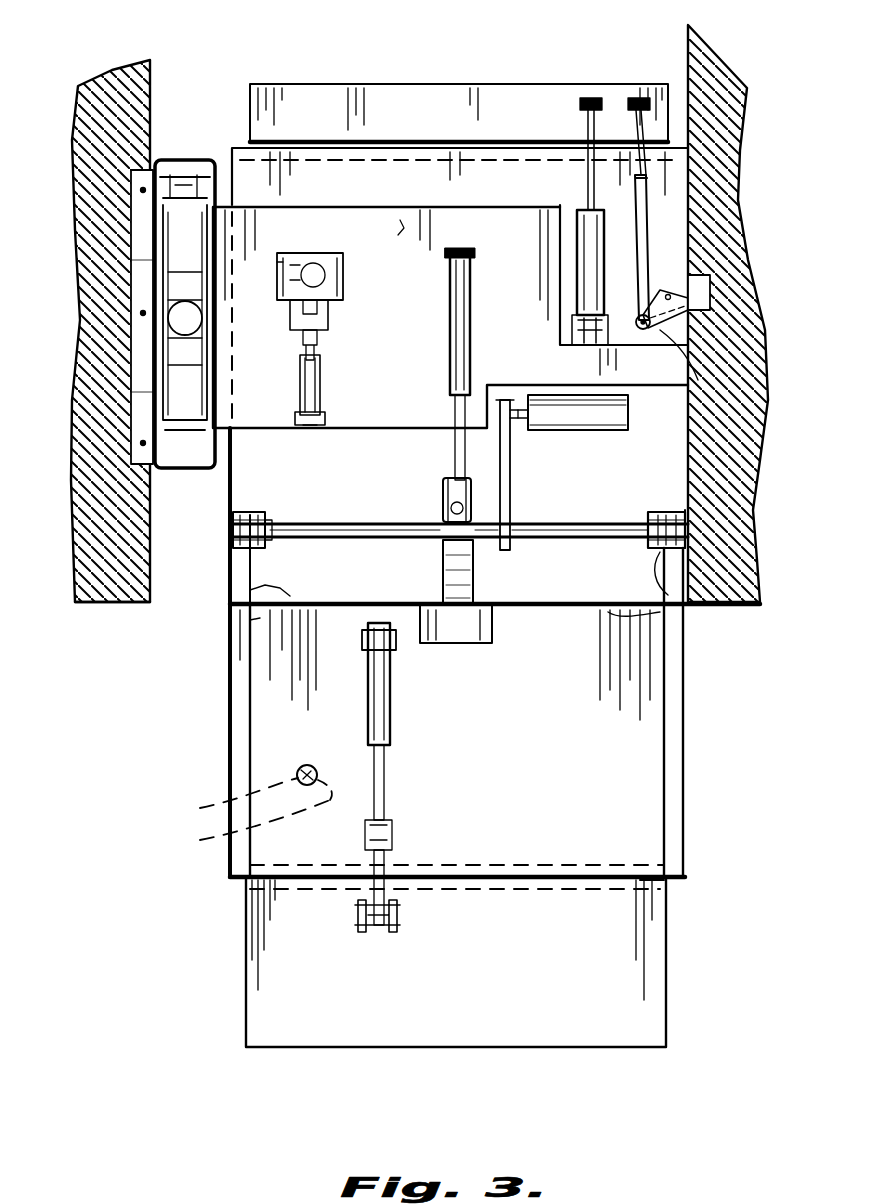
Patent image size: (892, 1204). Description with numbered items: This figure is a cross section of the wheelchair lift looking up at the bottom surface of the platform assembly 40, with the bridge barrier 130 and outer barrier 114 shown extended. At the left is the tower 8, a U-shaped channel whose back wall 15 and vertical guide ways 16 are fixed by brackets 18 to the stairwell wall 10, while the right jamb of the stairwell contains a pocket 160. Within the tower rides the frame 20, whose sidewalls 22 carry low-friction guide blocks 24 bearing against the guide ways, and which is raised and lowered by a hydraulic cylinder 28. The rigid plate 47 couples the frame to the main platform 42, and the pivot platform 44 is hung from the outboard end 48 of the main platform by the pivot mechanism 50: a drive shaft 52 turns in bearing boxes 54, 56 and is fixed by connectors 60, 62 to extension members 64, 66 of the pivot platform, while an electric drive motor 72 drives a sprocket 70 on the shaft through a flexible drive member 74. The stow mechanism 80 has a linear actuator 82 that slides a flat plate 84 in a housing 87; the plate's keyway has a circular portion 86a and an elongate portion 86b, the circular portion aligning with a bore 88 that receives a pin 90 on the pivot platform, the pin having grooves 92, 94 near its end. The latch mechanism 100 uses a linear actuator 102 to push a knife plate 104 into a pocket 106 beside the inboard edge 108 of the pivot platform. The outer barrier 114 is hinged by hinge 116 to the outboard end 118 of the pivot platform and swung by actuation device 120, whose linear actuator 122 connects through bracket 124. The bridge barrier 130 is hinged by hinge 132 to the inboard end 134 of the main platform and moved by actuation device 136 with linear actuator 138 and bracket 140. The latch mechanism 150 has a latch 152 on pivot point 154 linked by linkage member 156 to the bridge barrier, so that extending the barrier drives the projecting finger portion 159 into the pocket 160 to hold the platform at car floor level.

The tower 8 is at (150, 228).
The wall 10 is at (150, 95).
The back wall 15 is at (148, 392).
The vertical guide ways 16 is at (150, 490).
The brackets 18 is at (145, 275).
The frame 20 is at (213, 460).
The sidewalls 22 is at (190, 192).
The guide blocks 24 is at (175, 155).
The hydraulic cylinder 28 is at (178, 318).
The platform assembly 40 is at (200, 748).
The main platform 42 is at (245, 490).
The pivot platform 44 is at (632, 797).
The rigid plate 47 is at (400, 220).
The outboard end 48 is at (608, 612).
The pivot mechanism 50 is at (690, 518).
The drive shaft 52 is at (330, 538).
The bearing box 54 is at (235, 542).
The bearing box 56 is at (700, 535).
The connector 60 is at (265, 518).
The connector 62 is at (688, 560).
The extension member 64 is at (250, 585).
The extension member 66 is at (680, 565).
The sprocket 70 is at (515, 512).
The electric drive motor 72 is at (610, 432).
The flexible drive member 74 is at (510, 475).
The stow mechanism 80 is at (298, 400).
The linear actuator 82 is at (320, 382).
The flat plate 84 is at (322, 330).
The circular keyway portion 86a is at (313, 255).
The elongate keyway portion 86b is at (330, 306).
The housing 87 is at (277, 265).
The bore 88 is at (290, 290).
The pin 90 is at (307, 765).
The groove 92 is at (215, 810).
The groove 94 is at (245, 845).
The latch mechanism 100 is at (470, 268).
The linear actuator 102 is at (470, 298).
The knife plate 104 is at (470, 572).
The pocket 106 is at (492, 625).
The inboard edge 108 is at (250, 622).
The outer barrier 114 is at (650, 997).
The hinge 116 is at (650, 884).
The outboard end 118 is at (240, 882).
The actuation device 120 is at (395, 738).
The linear actuator 122 is at (392, 700).
The bracket 124 is at (400, 918).
The bridge barrier 130 is at (285, 84).
The hinge 132 is at (272, 142).
The inboard end 134 is at (745, 95).
The actuation device 136 is at (591, 98).
The linear actuator 138 is at (583, 173).
The bracket 140 is at (576, 222).
The latch mechanism 150 is at (660, 246).
The latch 152 is at (665, 320).
The pivot point 154 is at (680, 348).
The linkage member 156 is at (645, 183).
The projecting finger portion 159 is at (705, 292).
The pocket 160 is at (690, 332).